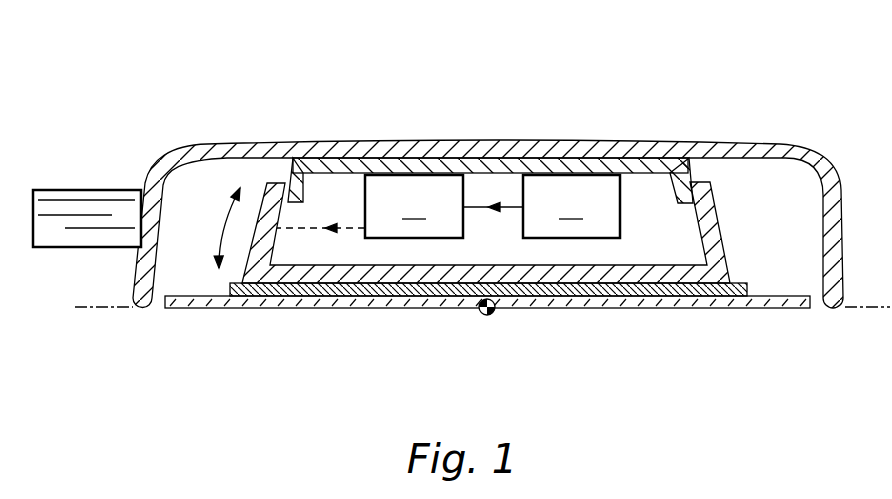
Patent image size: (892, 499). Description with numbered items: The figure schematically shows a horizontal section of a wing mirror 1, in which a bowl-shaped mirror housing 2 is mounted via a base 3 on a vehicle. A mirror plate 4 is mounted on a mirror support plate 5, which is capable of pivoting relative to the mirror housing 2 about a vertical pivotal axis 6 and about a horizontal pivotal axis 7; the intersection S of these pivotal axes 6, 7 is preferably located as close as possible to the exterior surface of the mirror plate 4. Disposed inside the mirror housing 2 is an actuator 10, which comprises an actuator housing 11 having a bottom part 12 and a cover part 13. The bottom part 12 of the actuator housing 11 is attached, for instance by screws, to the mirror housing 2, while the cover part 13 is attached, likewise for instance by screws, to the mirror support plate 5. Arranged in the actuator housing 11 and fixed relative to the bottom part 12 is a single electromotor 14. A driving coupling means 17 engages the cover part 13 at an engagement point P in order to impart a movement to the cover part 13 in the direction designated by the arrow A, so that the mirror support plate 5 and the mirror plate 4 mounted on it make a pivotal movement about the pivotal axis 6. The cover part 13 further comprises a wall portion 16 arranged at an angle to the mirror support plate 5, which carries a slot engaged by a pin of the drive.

The wing mirror 1 is at (461, 213).
The mirror housing 2 is at (228, 145).
The base 3 is at (87, 191).
The mirror plate 4 is at (223, 299).
The mirror support plate 5 is at (262, 292).
The vertical pivotal axis 6 is at (491, 311).
The horizontal pivotal axis 7 is at (92, 308).
The actuator 10 is at (443, 213).
The actuator housing 11 is at (685, 200).
The bottom part 12 is at (535, 143).
The cover part 13 is at (617, 280).
The electromotor 14 is at (571, 206).
The wall portion 16 is at (720, 225).
The driving coupling means 17 is at (414, 206).
The arrow A is at (222, 227).
The engagement point P is at (278, 228).
The intersection S is at (465, 328).